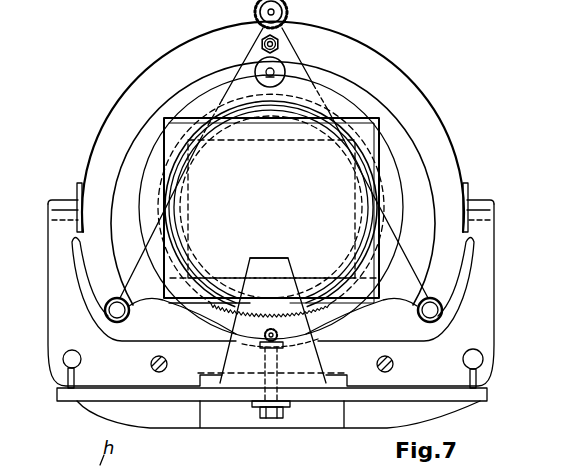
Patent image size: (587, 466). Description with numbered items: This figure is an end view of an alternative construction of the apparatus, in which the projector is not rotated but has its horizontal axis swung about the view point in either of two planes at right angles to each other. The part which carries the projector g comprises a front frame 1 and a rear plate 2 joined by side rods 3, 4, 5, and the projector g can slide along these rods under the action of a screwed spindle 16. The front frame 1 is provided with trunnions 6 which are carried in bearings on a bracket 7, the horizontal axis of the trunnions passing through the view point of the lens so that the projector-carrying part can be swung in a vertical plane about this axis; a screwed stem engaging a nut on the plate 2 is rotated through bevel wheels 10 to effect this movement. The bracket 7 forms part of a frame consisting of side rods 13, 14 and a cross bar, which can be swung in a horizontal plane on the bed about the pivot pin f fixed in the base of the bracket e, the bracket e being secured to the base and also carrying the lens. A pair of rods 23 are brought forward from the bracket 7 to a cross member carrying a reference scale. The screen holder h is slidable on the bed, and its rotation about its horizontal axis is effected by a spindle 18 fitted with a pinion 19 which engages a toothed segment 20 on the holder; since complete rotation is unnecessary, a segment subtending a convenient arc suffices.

The front frame 1 is at (423, 111).
The rear plate 2 is at (405, 262).
The side rod 3 is at (442, 311).
The side rod 4 is at (279, 43).
The side rod 5 is at (106, 312).
The trunnions 6 is at (56, 200).
The bracket 7 is at (489, 278).
The bevel wheels 10 is at (256, 20).
The side rod 13 is at (81, 359).
The side rod 14 is at (463, 361).
The screwed spindle 16 is at (285, 70).
The spindle 18 is at (267, 341).
The pinion 19 is at (320, 334).
The toothed segment 20 is at (229, 317).
The rods 23 is at (167, 365).
The bracket e is at (281, 264).
The pivot pin f is at (280, 368).
The projector g is at (176, 139).
The screen holder h is at (201, 141).